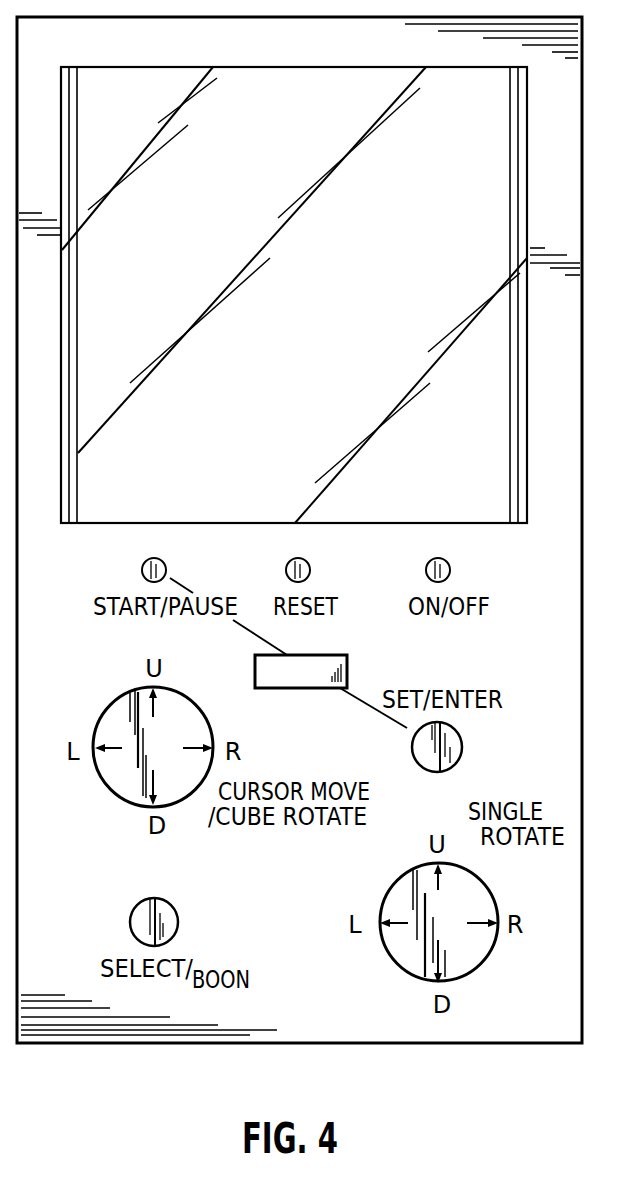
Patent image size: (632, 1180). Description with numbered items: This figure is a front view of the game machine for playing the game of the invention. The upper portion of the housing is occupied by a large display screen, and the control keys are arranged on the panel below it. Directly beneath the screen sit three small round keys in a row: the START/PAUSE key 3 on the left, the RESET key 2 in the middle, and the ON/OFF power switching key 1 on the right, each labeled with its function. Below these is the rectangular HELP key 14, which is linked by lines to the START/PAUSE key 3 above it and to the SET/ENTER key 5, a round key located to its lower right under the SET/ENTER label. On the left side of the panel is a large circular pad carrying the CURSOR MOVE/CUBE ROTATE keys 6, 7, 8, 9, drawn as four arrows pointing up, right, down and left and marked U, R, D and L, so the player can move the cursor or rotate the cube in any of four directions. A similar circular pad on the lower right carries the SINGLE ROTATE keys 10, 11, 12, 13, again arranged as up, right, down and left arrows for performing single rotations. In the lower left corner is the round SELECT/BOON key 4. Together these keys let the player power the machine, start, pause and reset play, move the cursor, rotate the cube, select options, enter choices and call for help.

The ON/OFF power switching key 1 is at (450, 567).
The RESET key 2 is at (309, 566).
The START/PAUSE key 3 is at (165, 564).
The SELECT/BOON key 4 is at (140, 913).
The SET/ENTER key 5 is at (462, 744).
The CURSOR MOVE/CUBE ROTATE key 6 is at (163, 690).
The CURSOR MOVE/CUBE ROTATE key 7 is at (211, 732).
The CURSOR MOVE/CUBE ROTATE key 8 is at (172, 813).
The CURSOR MOVE/CUBE ROTATE key 9 is at (101, 730).
The SINGLE ROTATE key 10 is at (428, 872).
The SINGLE ROTATE key 11 is at (492, 912).
The SINGLE ROTATE key 12 is at (420, 982).
The SINGLE ROTATE key 13 is at (382, 910).
The HELP key 14 is at (347, 655).